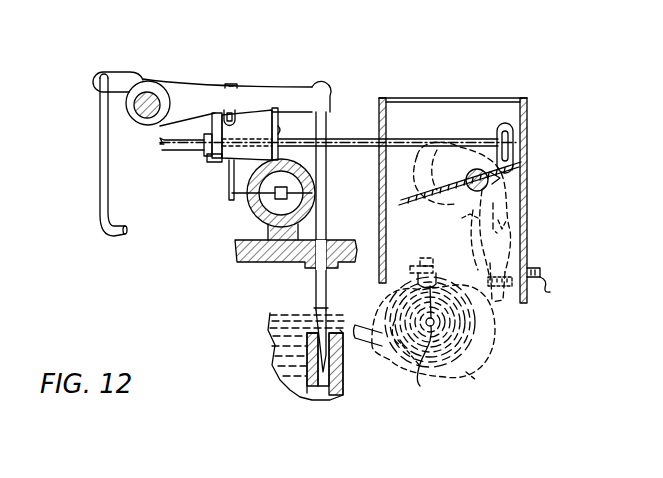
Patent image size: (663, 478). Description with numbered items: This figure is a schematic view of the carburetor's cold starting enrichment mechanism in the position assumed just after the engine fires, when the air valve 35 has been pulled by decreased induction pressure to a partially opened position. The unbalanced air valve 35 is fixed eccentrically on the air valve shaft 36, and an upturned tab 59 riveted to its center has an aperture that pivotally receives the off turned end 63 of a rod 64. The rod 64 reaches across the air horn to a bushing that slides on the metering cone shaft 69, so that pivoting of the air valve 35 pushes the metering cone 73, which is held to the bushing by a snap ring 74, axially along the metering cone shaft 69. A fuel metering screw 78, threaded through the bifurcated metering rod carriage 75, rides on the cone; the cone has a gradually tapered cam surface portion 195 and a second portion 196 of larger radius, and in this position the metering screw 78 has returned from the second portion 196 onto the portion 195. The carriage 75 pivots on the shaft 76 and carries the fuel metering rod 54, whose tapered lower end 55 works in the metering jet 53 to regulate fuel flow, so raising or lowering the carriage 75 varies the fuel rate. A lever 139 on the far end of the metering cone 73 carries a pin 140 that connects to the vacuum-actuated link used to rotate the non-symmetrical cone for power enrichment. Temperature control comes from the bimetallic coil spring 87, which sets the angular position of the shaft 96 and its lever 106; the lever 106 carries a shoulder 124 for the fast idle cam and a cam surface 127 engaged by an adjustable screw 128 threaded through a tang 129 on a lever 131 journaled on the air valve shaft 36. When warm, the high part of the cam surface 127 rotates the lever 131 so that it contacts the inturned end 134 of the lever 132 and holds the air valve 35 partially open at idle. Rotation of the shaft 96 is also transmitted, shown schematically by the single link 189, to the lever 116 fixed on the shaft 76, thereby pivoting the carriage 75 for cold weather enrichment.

The lever 116 is at (120, 82).
The shaft 76 is at (162, 98).
The link 189 is at (100, 132).
The metering rod carriage 75 is at (278, 96).
The tapered lower end 55 is at (323, 226).
The rod 64 is at (340, 141).
The snap ring 74 is at (213, 126).
The fuel metering screw 78 is at (228, 110).
The metering cone 73 is at (260, 122).
The cam surface portion 195 is at (284, 124).
The metering cone shaft 69 is at (172, 143).
The second cam surface portion 196 is at (208, 157).
The lever 139 is at (230, 178).
The pin 140 is at (252, 202).
The fuel metering rod 54 is at (320, 320).
The metering jet 53 is at (310, 378).
The off turned end 63 is at (505, 135).
The upturned tab 59 is at (500, 140).
The air valve shaft 36 is at (467, 178).
The air valve 35 is at (413, 198).
The lever 132 is at (500, 178).
The lever 131 is at (466, 222).
The inturned end 134 is at (504, 234).
The shoulder 124 is at (402, 278).
The shaft 96 is at (416, 362).
The bimetallic coil spring 87 is at (420, 366).
The lever 106 is at (386, 362).
The cam surface 127 is at (478, 368).
The tang 129 is at (497, 298).
The adjustable screw 128 is at (544, 282).